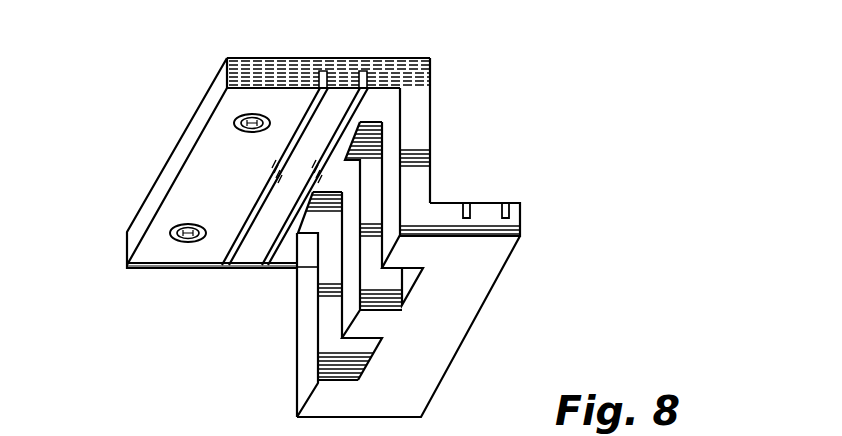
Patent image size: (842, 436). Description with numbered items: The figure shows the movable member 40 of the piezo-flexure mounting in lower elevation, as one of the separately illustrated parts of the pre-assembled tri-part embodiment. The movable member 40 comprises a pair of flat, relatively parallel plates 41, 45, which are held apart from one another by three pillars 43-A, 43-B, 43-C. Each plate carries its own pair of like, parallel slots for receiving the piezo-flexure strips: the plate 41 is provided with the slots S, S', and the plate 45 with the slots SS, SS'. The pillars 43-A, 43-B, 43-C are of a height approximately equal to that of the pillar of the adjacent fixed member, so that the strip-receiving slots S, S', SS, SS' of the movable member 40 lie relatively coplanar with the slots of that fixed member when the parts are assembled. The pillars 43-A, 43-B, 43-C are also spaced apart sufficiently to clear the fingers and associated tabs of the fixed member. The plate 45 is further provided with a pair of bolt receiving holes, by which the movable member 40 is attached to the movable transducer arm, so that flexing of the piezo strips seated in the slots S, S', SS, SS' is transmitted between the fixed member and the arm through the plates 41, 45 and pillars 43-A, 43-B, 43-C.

The movable member 40 is at (145, 80).
The plate 41 is at (469, 336).
The plate 45 is at (270, 58).
The pillar 43-A is at (305, 377).
The pillar 43-B is at (348, 260).
The pillar 43-C is at (431, 142).
The slot S is at (546, 190).
The slot S' is at (516, 169).
The slot SS is at (230, 202).
The slot SS' is at (272, 216).